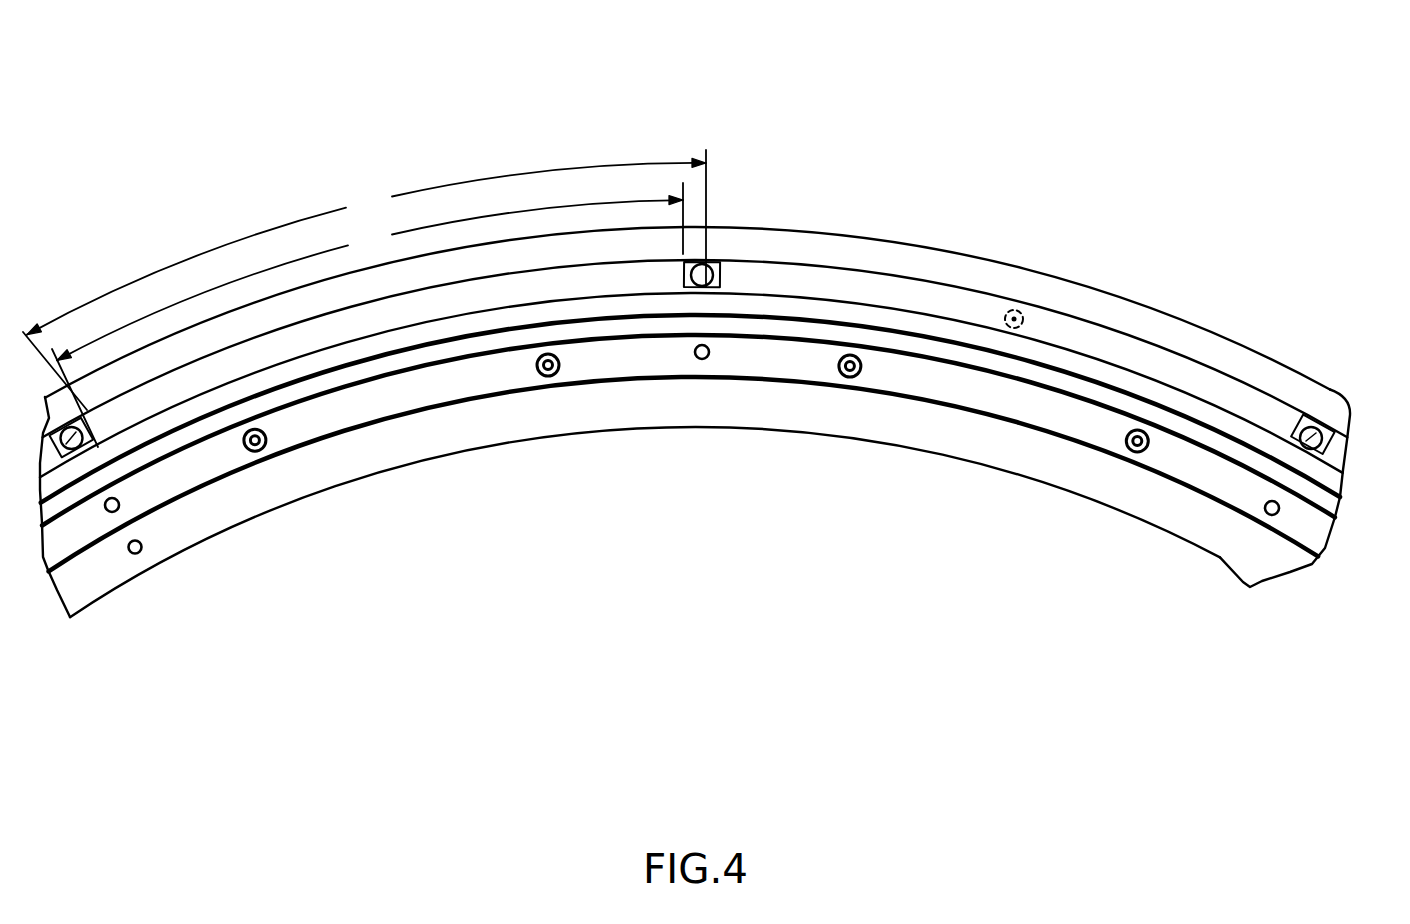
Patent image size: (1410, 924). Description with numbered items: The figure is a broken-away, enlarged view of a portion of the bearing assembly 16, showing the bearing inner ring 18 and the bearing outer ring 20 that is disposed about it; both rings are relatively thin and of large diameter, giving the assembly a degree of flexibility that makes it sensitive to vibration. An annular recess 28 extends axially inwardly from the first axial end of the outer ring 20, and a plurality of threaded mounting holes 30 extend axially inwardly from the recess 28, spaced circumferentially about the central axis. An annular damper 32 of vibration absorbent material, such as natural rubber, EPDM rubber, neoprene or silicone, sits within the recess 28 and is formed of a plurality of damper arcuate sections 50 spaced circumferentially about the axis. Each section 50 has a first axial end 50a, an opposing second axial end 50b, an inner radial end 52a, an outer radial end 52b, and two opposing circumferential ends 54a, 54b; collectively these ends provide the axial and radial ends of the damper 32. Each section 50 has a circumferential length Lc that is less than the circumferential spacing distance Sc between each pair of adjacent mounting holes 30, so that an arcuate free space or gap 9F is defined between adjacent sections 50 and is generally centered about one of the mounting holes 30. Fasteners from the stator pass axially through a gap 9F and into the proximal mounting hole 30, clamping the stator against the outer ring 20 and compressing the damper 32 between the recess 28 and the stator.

The bearing assembly 16 is at (757, 115).
The bearing inner ring 18 is at (898, 450).
The bearing outer ring 20 is at (815, 228).
The annular recess 28 is at (690, 290).
The threaded mounting holes 30 is at (86, 445).
The annular damper 32 is at (870, 270).
The damper arcuate sections 50 is at (957, 290).
The first axial end 50a is at (1152, 362).
The second axial end 50b is at (1105, 343).
The inner radial end 52a is at (1070, 353).
The outer radial end 52b is at (1103, 345).
The circumferential end 54a is at (92, 428).
The circumferential end 54b is at (682, 271).
The arcuate free space or gap 9F is at (70, 460).
The circumferential spacing distance Sc is at (364, 280).
The circumferential length Lc is at (367, 315).